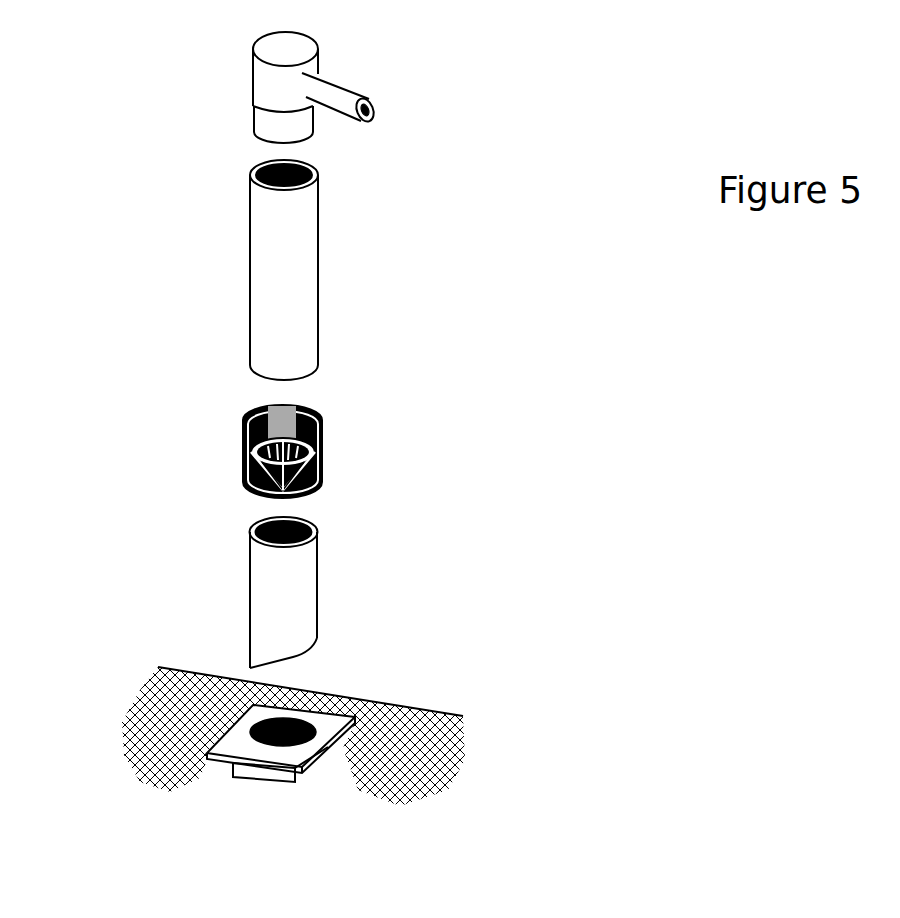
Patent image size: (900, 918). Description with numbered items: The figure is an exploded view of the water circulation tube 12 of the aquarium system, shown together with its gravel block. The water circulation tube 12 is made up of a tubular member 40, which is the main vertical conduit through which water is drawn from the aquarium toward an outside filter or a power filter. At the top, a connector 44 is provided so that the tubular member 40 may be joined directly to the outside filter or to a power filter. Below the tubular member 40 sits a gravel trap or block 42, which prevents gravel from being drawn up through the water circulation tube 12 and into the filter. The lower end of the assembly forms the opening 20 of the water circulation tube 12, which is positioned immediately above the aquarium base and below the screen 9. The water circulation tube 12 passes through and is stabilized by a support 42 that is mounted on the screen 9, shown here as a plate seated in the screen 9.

The water circulation tube 12 is at (240, 292).
The connector 44 is at (320, 46).
The tubular member 40 is at (320, 226).
The gravel trap or block 42 is at (325, 468).
The opening 20 is at (298, 658).
The screen 9 is at (440, 712).